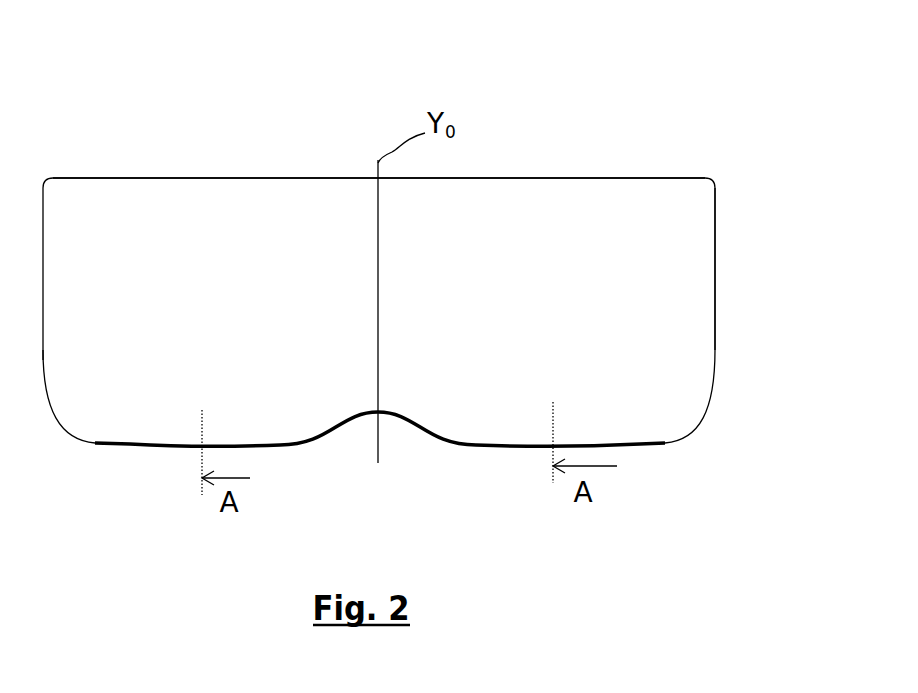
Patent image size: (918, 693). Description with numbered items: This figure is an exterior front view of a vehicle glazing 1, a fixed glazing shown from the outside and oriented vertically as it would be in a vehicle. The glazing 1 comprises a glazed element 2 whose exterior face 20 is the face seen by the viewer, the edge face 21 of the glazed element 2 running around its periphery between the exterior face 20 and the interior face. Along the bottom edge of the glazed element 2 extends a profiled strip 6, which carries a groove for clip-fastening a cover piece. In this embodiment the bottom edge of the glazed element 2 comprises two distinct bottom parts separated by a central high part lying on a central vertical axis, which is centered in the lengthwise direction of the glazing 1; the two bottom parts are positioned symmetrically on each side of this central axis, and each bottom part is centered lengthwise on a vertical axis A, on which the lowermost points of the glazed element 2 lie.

The vehicle glazing 1 is at (64, 143).
The glazed element 2 is at (605, 165).
The exterior face 20 is at (562, 291).
The edge face 21 is at (715, 258).
The profiled strip 6 is at (129, 443).